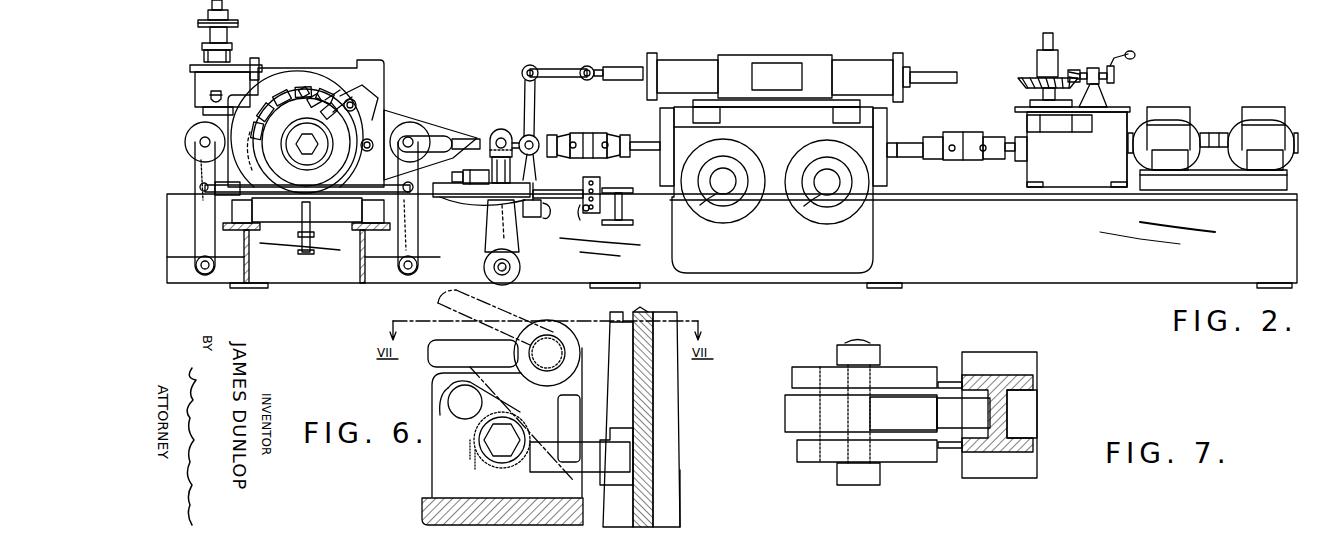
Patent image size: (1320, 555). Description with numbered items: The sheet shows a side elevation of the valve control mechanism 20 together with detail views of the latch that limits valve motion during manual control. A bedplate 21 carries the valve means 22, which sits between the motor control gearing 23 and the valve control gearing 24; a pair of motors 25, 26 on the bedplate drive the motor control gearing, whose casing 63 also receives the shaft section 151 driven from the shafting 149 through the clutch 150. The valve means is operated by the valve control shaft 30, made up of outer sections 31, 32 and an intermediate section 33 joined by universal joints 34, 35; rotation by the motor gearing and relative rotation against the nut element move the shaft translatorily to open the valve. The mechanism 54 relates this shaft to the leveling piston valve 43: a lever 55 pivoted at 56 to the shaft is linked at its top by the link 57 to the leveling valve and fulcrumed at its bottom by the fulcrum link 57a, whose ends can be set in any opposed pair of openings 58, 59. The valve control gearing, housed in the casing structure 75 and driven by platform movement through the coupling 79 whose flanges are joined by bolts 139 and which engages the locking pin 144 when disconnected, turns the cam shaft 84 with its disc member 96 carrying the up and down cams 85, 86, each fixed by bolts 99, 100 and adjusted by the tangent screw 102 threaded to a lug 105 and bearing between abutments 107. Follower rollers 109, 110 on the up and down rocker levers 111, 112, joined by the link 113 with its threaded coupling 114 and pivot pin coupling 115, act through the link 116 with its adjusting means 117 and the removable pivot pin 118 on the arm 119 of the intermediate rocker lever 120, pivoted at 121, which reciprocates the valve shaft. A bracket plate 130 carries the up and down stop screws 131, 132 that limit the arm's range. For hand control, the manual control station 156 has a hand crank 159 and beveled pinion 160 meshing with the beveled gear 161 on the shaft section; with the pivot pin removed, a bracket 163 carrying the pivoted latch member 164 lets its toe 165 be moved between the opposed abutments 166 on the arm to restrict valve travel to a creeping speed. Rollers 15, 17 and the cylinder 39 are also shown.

In FIG. 2, the roll 15 is at (828, 196).
In FIG. 2, the roll 17 is at (720, 205).
In FIG. 2, the valve control mechanism 20 is at (858, 41).
In FIG. 2, the bedplate 21 is at (1091, 272).
In FIG. 2, the valve means 22 is at (783, 138).
In FIG. 2, the motor control gearing 23 is at (1090, 161).
In FIG. 2, the valve control gearing 24 is at (329, 59).
In FIG. 2, the motor 25 is at (1177, 108).
In FIG. 2, the motor 26 is at (1265, 108).
In FIG. 2, the valve control shaft 30 is at (926, 178).
In FIG. 2, the outer section 31 is at (1015, 158).
In FIG. 2, the outer section 32 is at (558, 133).
In FIG. 2, the intermediate section 33 is at (640, 142).
In FIG. 2, the universal joint 34 is at (964, 135).
In FIG. 2, the universal joint 35 is at (595, 133).
In FIG. 2, the hydraulic cylinder 39 is at (735, 56).
In FIG. 2, the leveling piston valve 43 is at (622, 67).
In FIG. 2, the mechanism 54 is at (532, 61).
In FIG. 2, the lever 55 is at (536, 106).
In FIG. 2, the pivot 56 is at (537, 137).
In FIG. 2, the link 57 is at (562, 68).
In FIG. 2, the fulcrum link 57a is at (556, 214).
In FIG. 2, the openings 58 is at (532, 217).
In FIG. 2, the openings 59 is at (582, 220).
In FIG. 2, the motor control gear casing 63 is at (1120, 115).
In FIG. 2, the gear casing structure 75 is at (255, 85).
In FIG. 2, the coupling 79 is at (229, 36).
In FIG. 2, the cam shaft 84 is at (296, 150).
In FIG. 2, the up cam 85 is at (392, 114).
In FIG. 2, the down cam 86 is at (242, 101).
In FIG. 2, the disc member 96 is at (247, 147).
In FIG. 2, the bolt 99 is at (340, 154).
In FIG. 2, the bolt 100 is at (355, 98).
In FIG. 2, the tangent screw 102 is at (331, 114).
In FIG. 2, the lug 105 is at (332, 82).
In FIG. 2, the abutments 107 is at (311, 102).
In FIG. 2, the up follower roller 109 is at (420, 130).
In FIG. 2, the down follower roller 110 is at (198, 133).
In FIG. 2, the up rocker lever 111 is at (414, 228).
In FIG. 2, the down rocker lever 112 is at (197, 241).
In FIG. 2, the link 113 is at (354, 196).
In FIG. 2, the threaded coupling 114 is at (242, 200).
In FIG. 2, the pivot pin coupling 115 is at (200, 185).
In FIG. 2, the link 116 is at (475, 139).
In FIG. 2, the length adjusting means 117 is at (450, 137).
In FIG. 2, the removable pivot pin 118 is at (505, 130).
In FIG. 2, the arm 119 is at (487, 226).
In FIG. 6, the arm 119 is at (660, 374).
In FIG. 7, the arm 119 is at (1022, 365).
In FIG. 2, the intermediate rocker lever 120 is at (495, 260).
In FIG. 6, the intermediate rocker lever 120 is at (720, 501).
In FIG. 2, the pivot 121 is at (511, 268).
In FIG. 2, the bracket plate 130 is at (470, 202).
In FIG. 6, the bracket plate 130 is at (432, 520).
In FIG. 2, the up stop screw 131 is at (546, 182).
In FIG. 2, the down stop screw 132 is at (452, 177).
In FIG. 2, the bolts 139 is at (207, 16).
In FIG. 2, the locking pin 144 is at (201, 48).
In FIG. 2, the shafting 149 is at (1045, 34).
In FIG. 2, the clutch 150 is at (1036, 66).
In FIG. 2, the shaft section 151 is at (1042, 99).
In FIG. 2, the manual control station 156 is at (1113, 44).
In FIG. 2, the hand crank 159 is at (1140, 45).
In FIG. 2, the beveled pinion 160 is at (600, 192).
In FIG. 2, the beveled gear 161 is at (1020, 81).
In FIG. 6, the bracket 163 is at (432, 475).
In FIG. 7, the bracket 163 is at (818, 462).
In FIG. 6, the latch member 164 is at (545, 322).
In FIG. 6, the toe 165 is at (615, 455).
In FIG. 7, the toe 165 is at (948, 396).
In FIG. 6, the abutments 166 is at (615, 430).
In FIG. 7, the abutments 166 is at (980, 382).